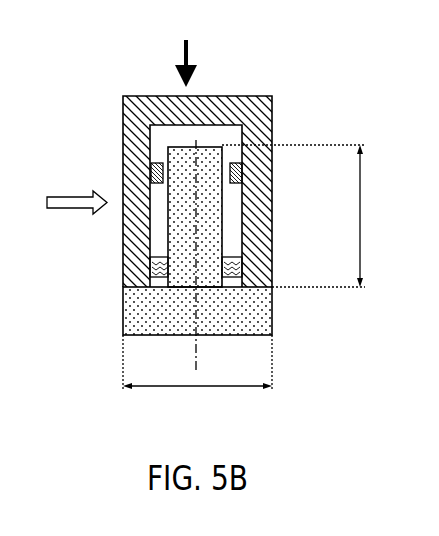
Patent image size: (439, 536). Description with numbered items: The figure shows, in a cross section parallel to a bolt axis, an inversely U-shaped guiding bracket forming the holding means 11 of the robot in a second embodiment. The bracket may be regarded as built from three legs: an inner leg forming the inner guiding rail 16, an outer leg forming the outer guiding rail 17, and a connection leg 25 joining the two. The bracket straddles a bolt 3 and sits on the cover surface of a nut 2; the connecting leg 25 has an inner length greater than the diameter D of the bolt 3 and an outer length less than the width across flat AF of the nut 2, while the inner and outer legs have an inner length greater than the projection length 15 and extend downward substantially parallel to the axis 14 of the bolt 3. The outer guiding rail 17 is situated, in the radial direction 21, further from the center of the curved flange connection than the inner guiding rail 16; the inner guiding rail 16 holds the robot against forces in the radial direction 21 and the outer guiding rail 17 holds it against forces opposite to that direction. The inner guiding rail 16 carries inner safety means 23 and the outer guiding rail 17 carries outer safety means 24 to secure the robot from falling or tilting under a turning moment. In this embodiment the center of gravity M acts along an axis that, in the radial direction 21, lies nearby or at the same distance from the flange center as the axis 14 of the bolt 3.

The holding means 11 is at (324, 52).
The nut 2 is at (233, 313).
The bolt 3 is at (183, 155).
The axis of the bolt 14 is at (196, 352).
The projection length 15 is at (305, 216).
The inner guiding rail 16 is at (135, 238).
The outer guiding rail 17 is at (262, 123).
The radial direction 21 is at (72, 203).
The inner safety means 23 is at (155, 272).
The outer safety means 24 is at (262, 262).
The connection leg 25 is at (152, 108).